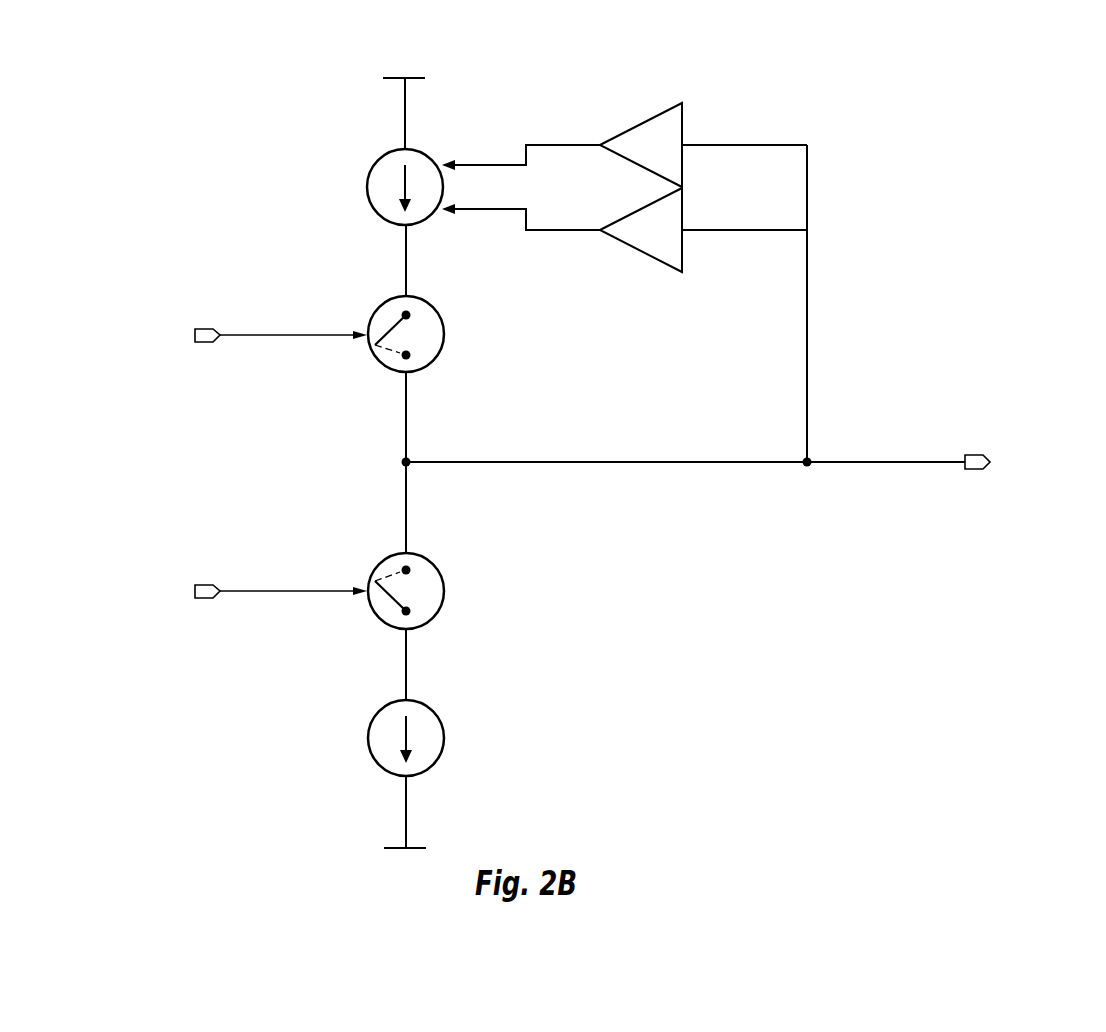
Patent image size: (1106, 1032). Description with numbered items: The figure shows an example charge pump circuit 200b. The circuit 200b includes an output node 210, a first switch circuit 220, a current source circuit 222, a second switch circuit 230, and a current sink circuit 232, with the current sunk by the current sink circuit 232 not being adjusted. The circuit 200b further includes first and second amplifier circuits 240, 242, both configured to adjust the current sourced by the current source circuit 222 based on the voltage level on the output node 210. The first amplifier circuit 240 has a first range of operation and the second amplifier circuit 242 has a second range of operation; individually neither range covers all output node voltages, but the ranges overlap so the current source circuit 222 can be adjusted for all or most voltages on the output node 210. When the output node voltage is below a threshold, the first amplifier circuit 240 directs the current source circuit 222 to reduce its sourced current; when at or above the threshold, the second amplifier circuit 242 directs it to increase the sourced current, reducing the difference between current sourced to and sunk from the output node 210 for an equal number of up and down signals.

The charge pump circuit 200b is at (944, 104).
The output node 210 is at (809, 460).
The first switch circuit 220 is at (445, 323).
The current source circuit 222 is at (367, 175).
The second switch circuit 230 is at (445, 577).
The current sink circuit 232 is at (368, 728).
The first amplifier circuit 240 is at (668, 156).
The second amplifier circuit 242 is at (668, 241).